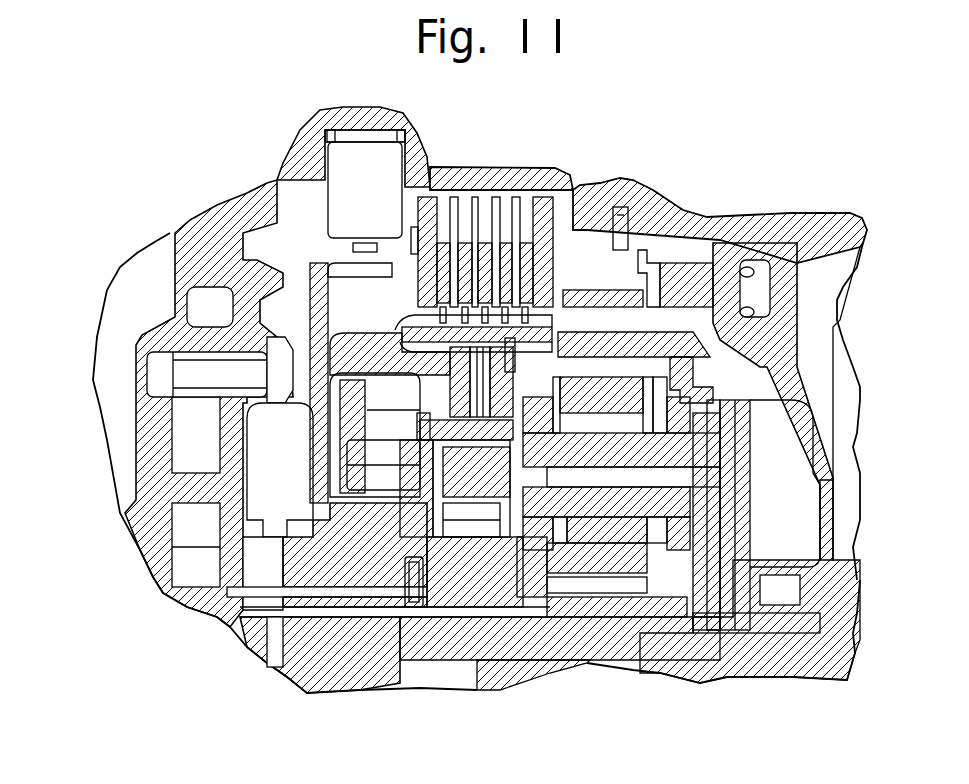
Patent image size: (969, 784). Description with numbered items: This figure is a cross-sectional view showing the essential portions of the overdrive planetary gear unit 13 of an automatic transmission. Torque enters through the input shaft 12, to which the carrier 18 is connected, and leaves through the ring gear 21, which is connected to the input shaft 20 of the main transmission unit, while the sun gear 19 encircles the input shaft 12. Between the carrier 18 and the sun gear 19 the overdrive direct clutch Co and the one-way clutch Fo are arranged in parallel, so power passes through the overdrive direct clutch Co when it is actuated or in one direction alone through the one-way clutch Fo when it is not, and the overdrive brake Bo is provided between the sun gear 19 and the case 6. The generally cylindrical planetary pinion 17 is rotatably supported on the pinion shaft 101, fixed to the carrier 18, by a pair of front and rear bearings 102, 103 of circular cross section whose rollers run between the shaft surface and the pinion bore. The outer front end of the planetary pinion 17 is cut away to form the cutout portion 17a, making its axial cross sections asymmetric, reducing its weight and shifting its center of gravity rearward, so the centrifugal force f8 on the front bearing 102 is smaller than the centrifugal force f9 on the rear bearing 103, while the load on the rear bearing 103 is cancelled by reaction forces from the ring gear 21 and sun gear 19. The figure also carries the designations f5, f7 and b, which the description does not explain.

The case 6 is at (487, 168).
The overdrive brake Bo is at (503, 237).
The overdrive planetary gear unit 13 is at (593, 258).
The ring gear 21 is at (603, 332).
The planetary pinion 17 is at (605, 342).
The cutout portion 17a is at (560, 397).
The overdrive direct clutch Co is at (450, 372).
The oil flow f5 is at (607, 367).
The oil passage b is at (630, 492).
The carrier 18 is at (738, 397).
The pinion shaft 101 is at (670, 450).
The front bearing 102 is at (581, 423).
The rear bearing 103 is at (617, 423).
The centrifugal force on front bearing f8 is at (572, 525).
The centrifugal force on rear bearing f9 is at (627, 525).
The one-way clutch Fo is at (475, 545).
The oil flow f7 is at (600, 587).
The input shaft 12 is at (433, 643).
The sun gear 19 is at (573, 600).
The input shaft of main transmission unit 20 is at (790, 667).